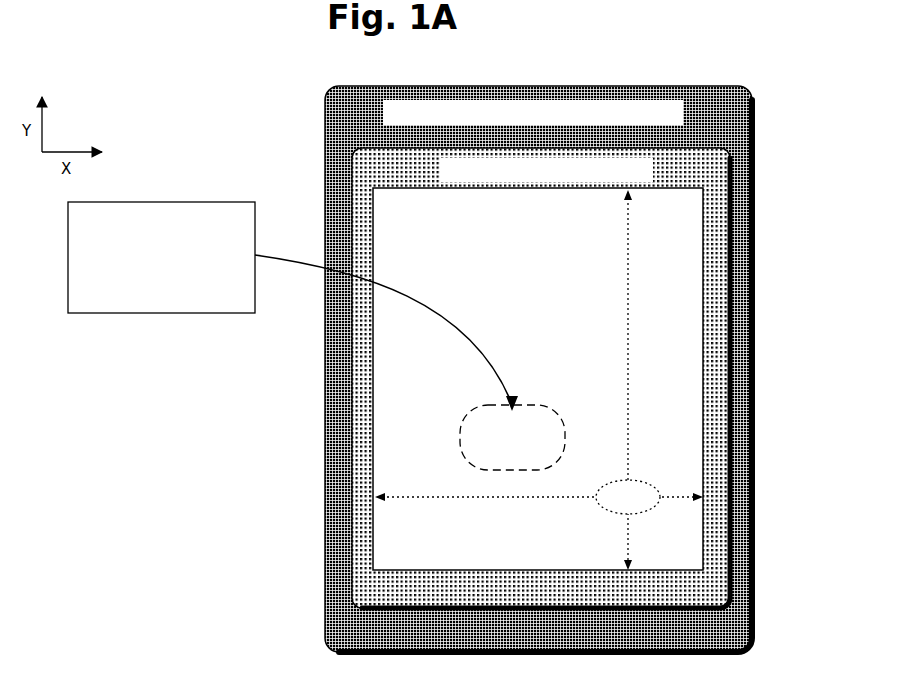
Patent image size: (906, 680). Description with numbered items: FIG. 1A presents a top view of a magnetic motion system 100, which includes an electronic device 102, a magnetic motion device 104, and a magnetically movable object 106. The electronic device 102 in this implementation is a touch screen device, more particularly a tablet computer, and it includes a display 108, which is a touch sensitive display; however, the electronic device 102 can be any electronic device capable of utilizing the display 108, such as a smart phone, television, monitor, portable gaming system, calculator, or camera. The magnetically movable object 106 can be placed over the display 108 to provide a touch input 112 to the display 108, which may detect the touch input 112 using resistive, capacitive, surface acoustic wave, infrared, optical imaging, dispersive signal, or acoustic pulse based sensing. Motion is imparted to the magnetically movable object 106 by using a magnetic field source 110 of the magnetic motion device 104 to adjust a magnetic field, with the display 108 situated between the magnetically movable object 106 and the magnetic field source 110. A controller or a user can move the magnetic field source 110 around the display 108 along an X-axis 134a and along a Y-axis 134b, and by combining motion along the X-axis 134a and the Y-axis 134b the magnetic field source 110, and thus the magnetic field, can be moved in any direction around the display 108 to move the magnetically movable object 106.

The magnetic motion system 100 is at (708, 57).
The electronic device 102 is at (710, 598).
The magnetic motion device 104 is at (728, 644).
The magnetically movable object 106 is at (146, 302).
The display 108 is at (522, 316).
The magnetic field source 110 is at (612, 506).
The touch input 112 is at (543, 406).
The X-axis 134a is at (436, 499).
The Y-axis 134b is at (630, 405).